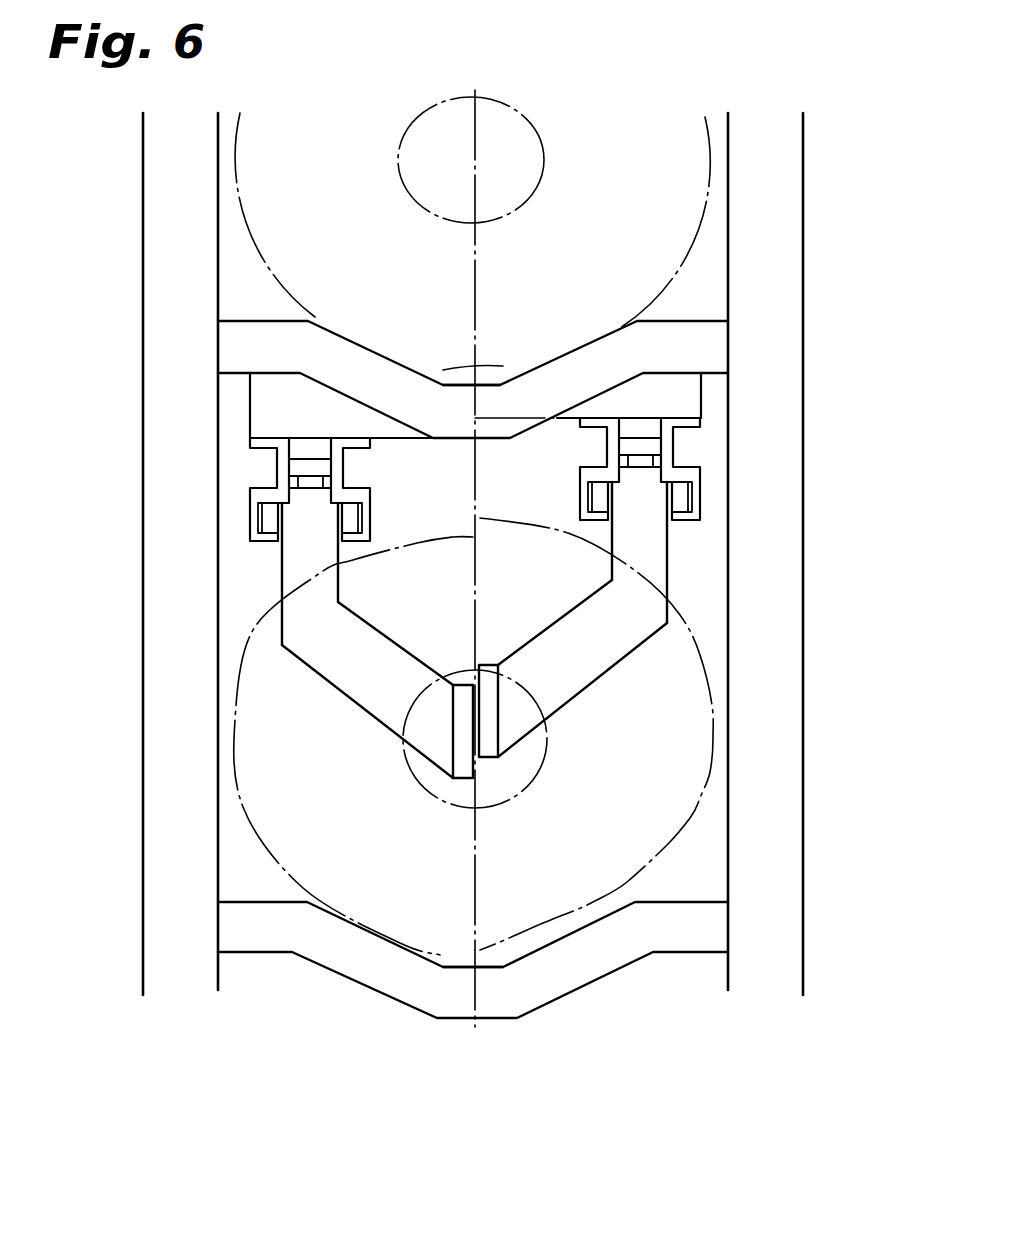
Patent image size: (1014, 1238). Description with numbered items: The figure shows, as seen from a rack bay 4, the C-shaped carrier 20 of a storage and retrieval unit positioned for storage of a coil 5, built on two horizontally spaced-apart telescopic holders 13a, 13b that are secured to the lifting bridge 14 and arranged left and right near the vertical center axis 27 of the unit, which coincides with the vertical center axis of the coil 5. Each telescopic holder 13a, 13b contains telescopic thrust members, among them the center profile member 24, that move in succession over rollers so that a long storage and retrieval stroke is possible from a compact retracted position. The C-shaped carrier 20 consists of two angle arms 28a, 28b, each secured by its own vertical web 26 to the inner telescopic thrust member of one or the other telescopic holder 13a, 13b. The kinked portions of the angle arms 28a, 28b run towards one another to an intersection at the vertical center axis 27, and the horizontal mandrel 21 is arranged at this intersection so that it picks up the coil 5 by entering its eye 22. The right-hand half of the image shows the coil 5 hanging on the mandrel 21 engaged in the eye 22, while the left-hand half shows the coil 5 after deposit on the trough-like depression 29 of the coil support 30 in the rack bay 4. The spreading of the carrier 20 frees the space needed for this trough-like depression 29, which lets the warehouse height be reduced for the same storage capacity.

The rack bay 4 is at (705, 258).
The coil 5 is at (708, 186).
The telescopic holder 13a is at (232, 483).
The telescopic holder 13b is at (705, 470).
The lifting bridge 14 is at (648, 385).
The C-shaped carrier 20 is at (474, 632).
The horizontal mandrel 21 is at (465, 710).
The eye 22 is at (520, 130).
The center profile member 24 is at (270, 462).
The vertical web 26 is at (300, 560).
The vertical center axis 27 is at (472, 285).
The angle arm 28a is at (335, 690).
The angle arm 28b is at (612, 672).
The trough-like depression 29 is at (497, 385).
The coil support 30 is at (683, 320).